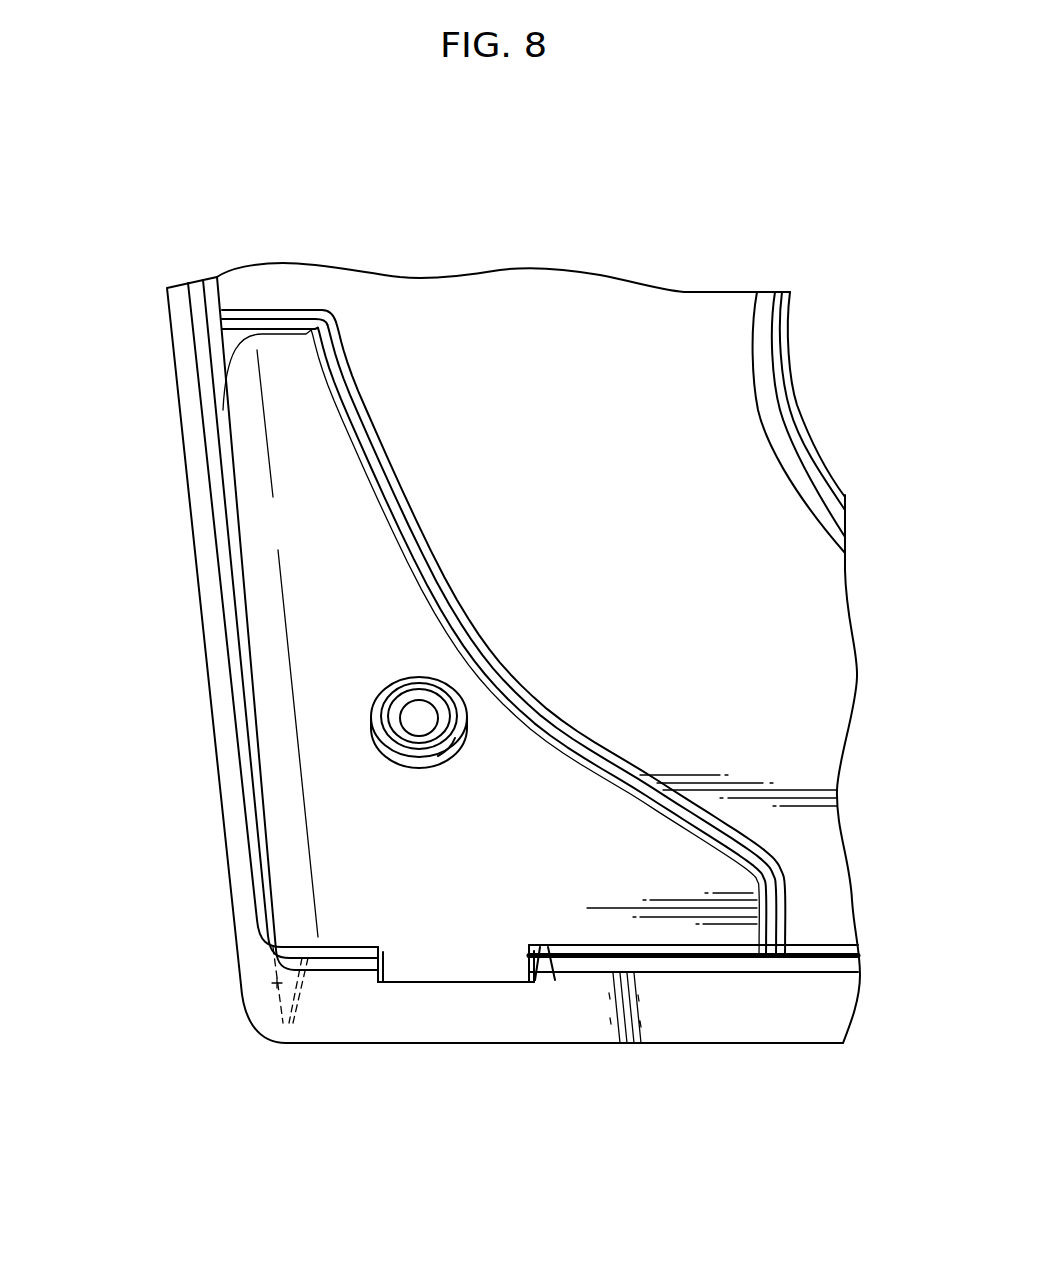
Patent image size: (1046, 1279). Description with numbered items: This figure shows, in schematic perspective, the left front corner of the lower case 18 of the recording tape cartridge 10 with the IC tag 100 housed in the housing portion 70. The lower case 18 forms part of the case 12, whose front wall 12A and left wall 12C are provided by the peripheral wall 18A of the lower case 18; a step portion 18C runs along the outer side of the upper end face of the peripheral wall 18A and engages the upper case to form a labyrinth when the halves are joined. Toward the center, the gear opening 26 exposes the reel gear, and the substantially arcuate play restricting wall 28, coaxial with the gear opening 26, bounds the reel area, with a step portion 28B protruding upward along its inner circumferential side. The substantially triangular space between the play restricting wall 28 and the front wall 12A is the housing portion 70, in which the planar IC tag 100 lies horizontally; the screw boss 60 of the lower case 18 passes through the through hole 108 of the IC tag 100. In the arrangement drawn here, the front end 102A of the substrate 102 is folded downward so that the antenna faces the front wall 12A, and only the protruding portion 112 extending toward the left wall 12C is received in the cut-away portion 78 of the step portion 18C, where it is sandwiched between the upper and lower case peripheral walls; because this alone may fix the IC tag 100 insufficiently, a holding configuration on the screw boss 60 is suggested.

The recording tape cartridge 10 is at (297, 152).
The case 12 is at (687, 1068).
The front wall 12A is at (187, 398).
The left wall 12C is at (768, 1012).
The lower case 18 is at (175, 618).
The peripheral wall 18A is at (197, 483).
The step portion 18C is at (823, 965).
The gear opening 26 is at (760, 408).
The play restricting wall 28 is at (370, 425).
The step portion 28B is at (323, 308).
The screw boss 60 is at (423, 717).
The housing portion 70 is at (550, 947).
The cut-away portion 78 is at (390, 983).
The IC tag 100 is at (583, 817).
The substrate 102 is at (364, 566).
The front end 102A is at (270, 981).
The through hole 108 is at (457, 747).
The protruding portion 112 is at (470, 963).